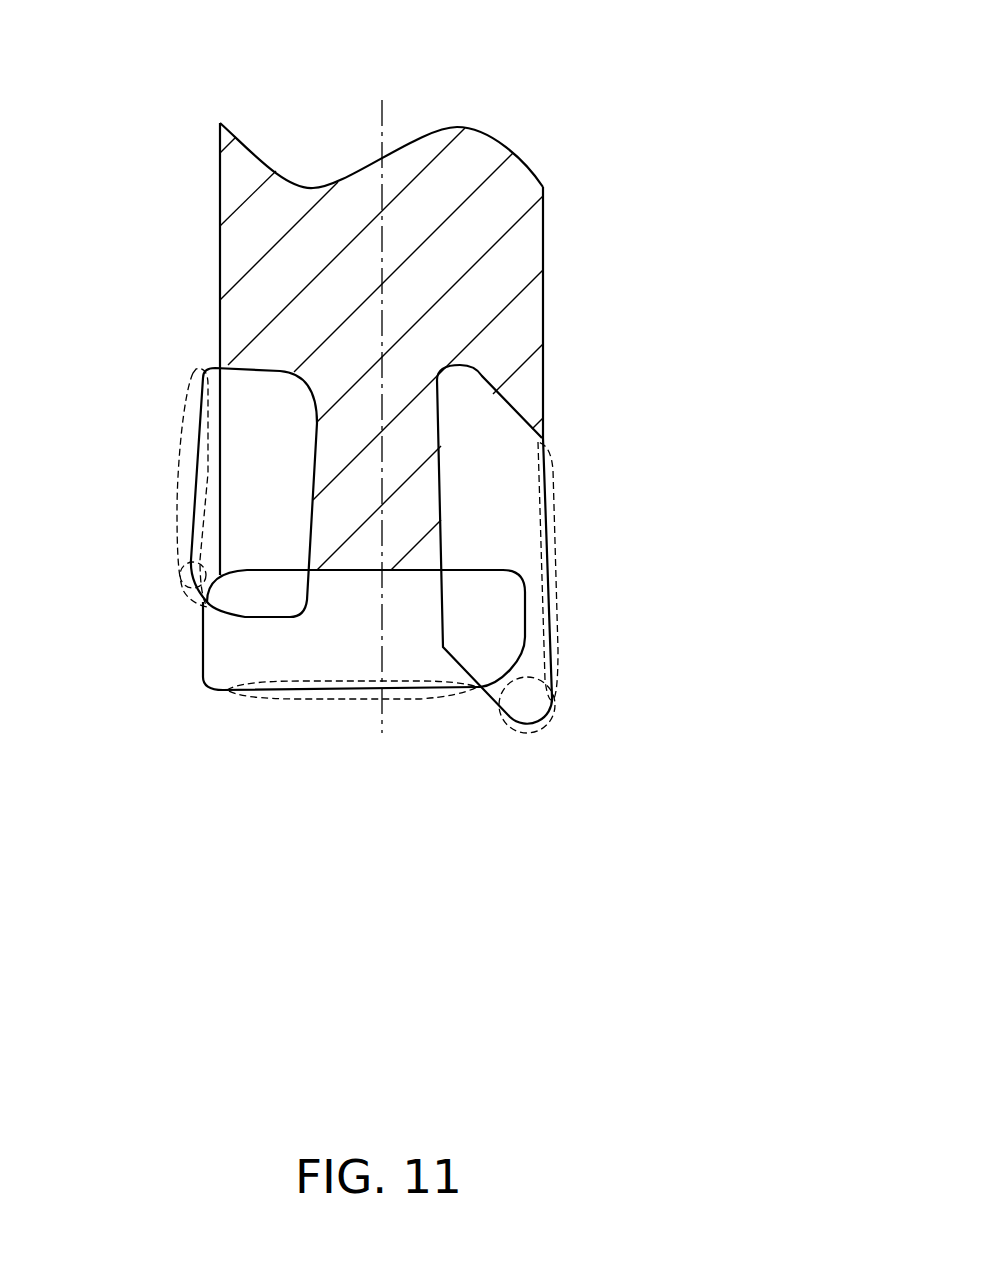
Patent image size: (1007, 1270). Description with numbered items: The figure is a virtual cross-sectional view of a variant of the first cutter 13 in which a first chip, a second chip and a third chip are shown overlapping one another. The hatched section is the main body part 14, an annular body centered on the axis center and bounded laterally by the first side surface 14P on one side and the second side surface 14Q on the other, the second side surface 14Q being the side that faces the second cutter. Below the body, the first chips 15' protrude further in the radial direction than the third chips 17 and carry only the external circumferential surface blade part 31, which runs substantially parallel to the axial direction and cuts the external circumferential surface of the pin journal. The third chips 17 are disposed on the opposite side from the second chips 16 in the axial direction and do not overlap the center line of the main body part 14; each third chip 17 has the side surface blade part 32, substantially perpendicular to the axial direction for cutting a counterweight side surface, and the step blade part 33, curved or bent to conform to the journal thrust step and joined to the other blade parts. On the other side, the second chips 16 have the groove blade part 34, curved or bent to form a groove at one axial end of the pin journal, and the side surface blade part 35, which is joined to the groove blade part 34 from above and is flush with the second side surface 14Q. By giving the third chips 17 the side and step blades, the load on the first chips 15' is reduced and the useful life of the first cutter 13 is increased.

The first cutter 13 is at (587, 98).
The main body part 14 is at (218, 188).
The first side surface 14P is at (212, 267).
The second side surface 14Q is at (546, 256).
The first chips 15' is at (364, 675).
The second chips 16 is at (547, 475).
The third chips 17 is at (193, 410).
The external circumferential surface blade part 31 is at (246, 698).
The side surface blade part 32 is at (173, 520).
The step blade part 33 is at (187, 600).
The groove blade part 34 is at (547, 730).
The side surface blade part 35 is at (560, 575).